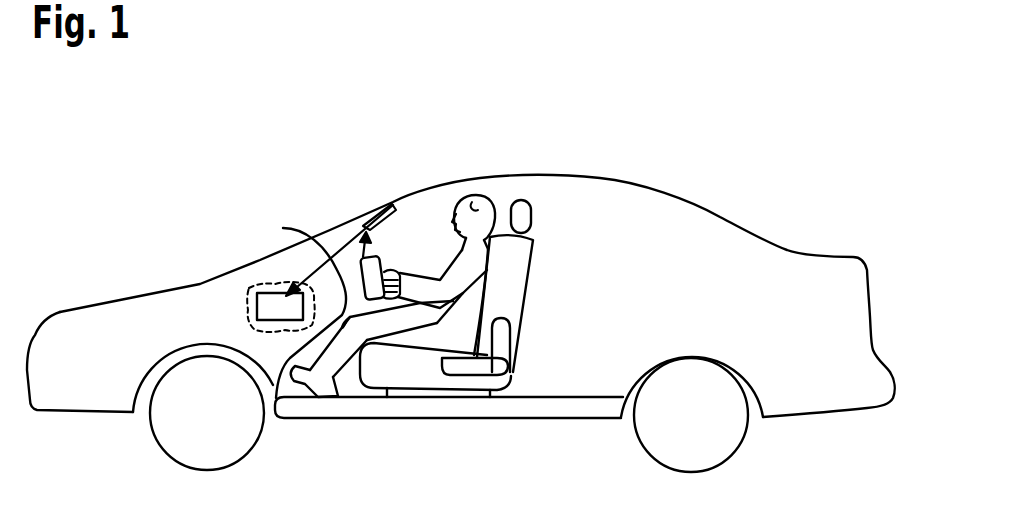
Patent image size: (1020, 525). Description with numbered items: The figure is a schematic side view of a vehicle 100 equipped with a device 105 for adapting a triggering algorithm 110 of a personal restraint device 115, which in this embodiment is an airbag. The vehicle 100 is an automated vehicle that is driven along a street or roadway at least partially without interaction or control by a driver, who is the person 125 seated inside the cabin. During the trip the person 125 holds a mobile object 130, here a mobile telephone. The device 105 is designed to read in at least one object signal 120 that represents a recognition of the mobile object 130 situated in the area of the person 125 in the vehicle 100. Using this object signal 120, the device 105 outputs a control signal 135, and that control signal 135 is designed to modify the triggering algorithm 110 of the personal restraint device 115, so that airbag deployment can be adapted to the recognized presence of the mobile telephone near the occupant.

The vehicle 100 is at (787, 251).
The device 105 is at (350, 230).
The triggering algorithm 110 is at (267, 308).
The personal restraint device 115 is at (263, 285).
The object signal 120 is at (362, 226).
The person 125 is at (477, 192).
The mobile object 130 is at (384, 257).
The control signal 135 is at (283, 228).